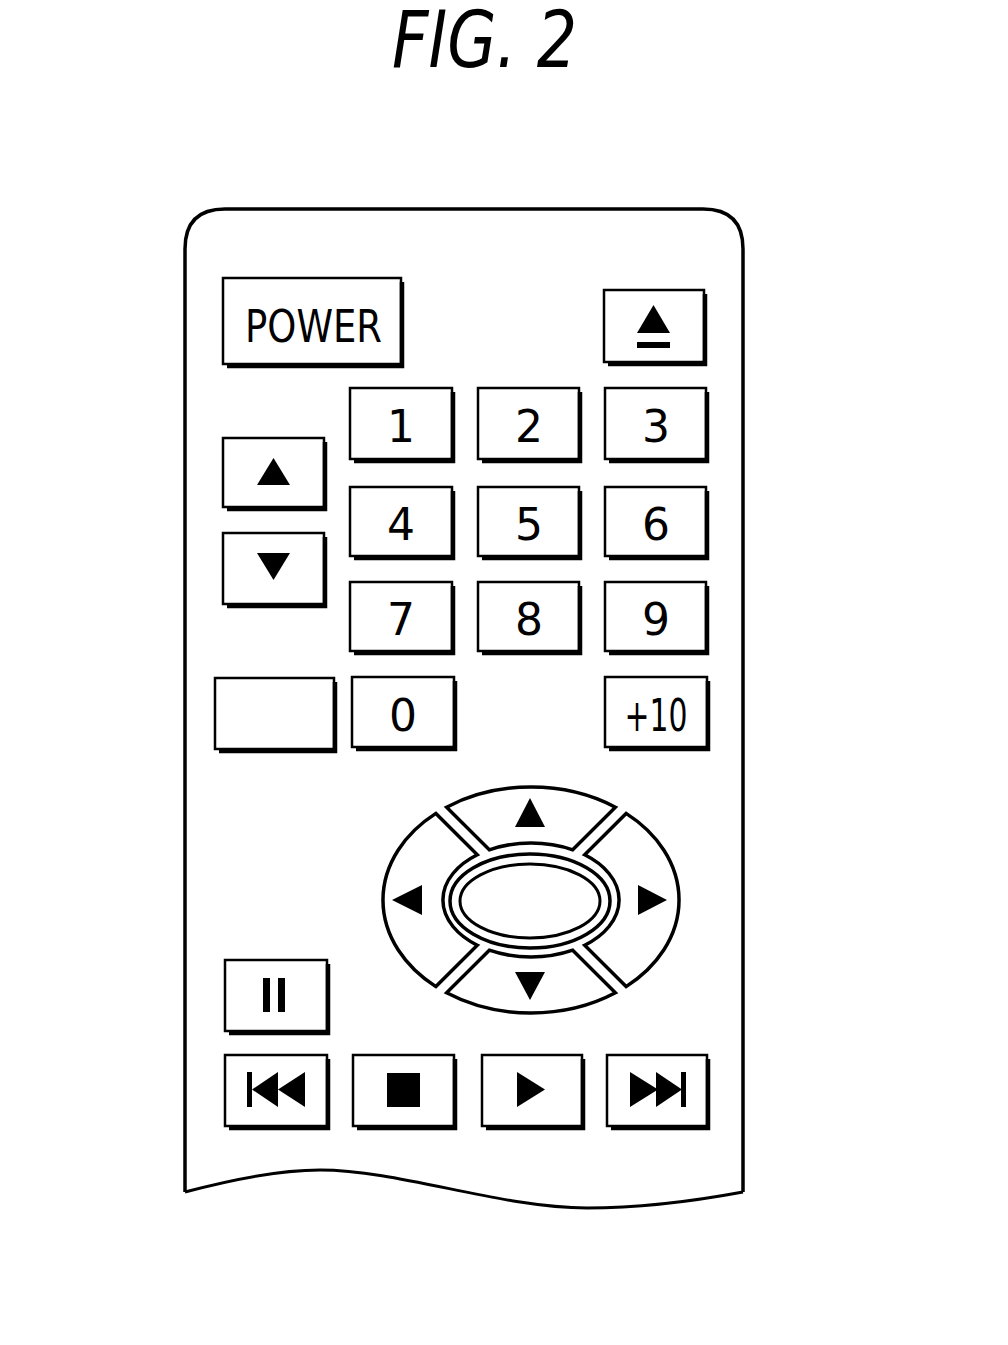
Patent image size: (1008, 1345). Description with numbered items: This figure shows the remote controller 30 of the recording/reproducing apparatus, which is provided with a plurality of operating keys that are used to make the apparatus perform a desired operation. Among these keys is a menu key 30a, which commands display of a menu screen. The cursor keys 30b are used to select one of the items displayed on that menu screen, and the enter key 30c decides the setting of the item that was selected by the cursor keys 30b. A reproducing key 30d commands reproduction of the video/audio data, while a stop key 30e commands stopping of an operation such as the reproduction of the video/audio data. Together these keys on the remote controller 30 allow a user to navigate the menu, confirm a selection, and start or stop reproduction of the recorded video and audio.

The remote controller 30 is at (745, 318).
The menu key 30a is at (213, 714).
The cursor keys 30b is at (603, 987).
The enter key 30c is at (577, 860).
The reproducing key 30d is at (533, 1129).
The stop key 30e is at (407, 1129).